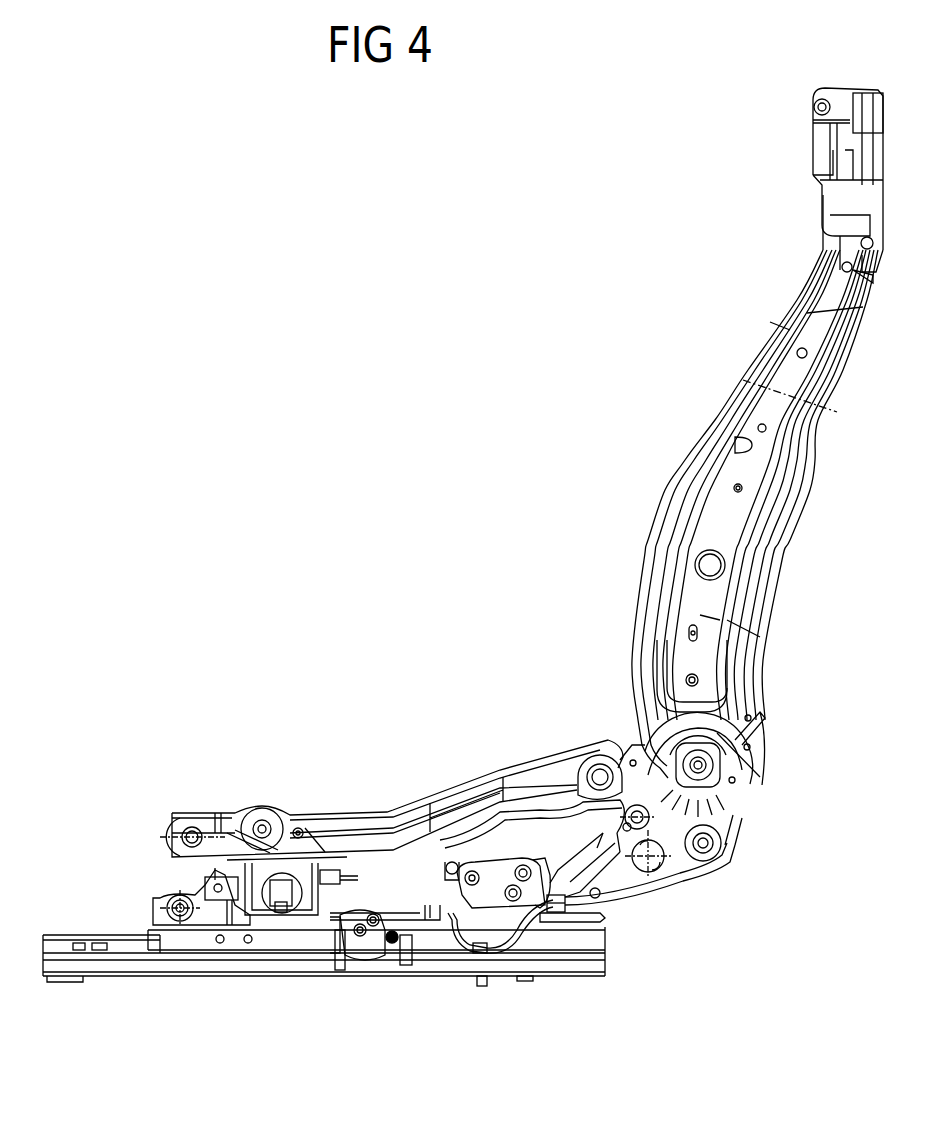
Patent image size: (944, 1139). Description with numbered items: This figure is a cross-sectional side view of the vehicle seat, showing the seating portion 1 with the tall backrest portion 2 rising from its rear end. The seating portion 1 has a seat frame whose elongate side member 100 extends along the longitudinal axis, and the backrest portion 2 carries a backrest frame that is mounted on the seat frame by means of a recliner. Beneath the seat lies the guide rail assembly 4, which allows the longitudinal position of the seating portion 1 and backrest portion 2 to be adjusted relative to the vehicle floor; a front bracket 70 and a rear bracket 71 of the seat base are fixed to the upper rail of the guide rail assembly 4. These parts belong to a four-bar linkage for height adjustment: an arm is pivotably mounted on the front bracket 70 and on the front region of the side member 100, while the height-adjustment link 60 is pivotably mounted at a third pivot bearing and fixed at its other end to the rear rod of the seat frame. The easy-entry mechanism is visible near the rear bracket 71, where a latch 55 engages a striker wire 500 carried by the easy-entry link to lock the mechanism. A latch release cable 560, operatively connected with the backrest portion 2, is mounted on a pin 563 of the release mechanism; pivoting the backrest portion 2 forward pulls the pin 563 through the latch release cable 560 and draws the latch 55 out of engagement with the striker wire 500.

The seating portion 1 is at (306, 770).
The backrest portion 2 is at (795, 551).
The guide rail assembly 4 is at (134, 985).
The latch 55 is at (512, 863).
The height-adjustment link 60 is at (603, 865).
The front bracket 70 is at (143, 913).
The rear bracket 71 is at (432, 910).
The side member 100 is at (447, 800).
The striker wire 500 is at (525, 867).
The latch release cable 560 is at (640, 890).
The pin 563 is at (437, 873).